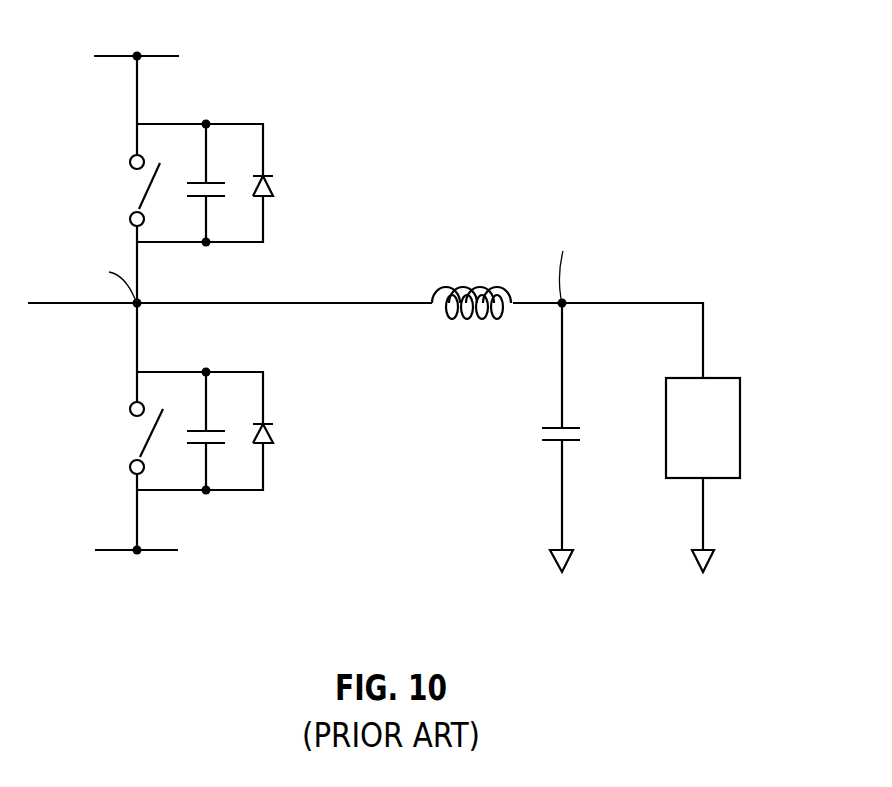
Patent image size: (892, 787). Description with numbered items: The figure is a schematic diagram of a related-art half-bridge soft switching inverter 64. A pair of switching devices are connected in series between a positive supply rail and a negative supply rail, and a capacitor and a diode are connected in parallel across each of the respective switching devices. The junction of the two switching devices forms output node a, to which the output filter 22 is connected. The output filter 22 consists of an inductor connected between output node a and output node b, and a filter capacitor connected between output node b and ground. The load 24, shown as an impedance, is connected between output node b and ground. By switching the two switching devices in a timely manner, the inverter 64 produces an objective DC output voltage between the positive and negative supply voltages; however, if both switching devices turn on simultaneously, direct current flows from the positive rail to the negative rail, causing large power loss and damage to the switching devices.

The output filter 22 is at (472, 233).
The load 24 is at (731, 416).
The soft switching inverter 64 is at (585, 96).